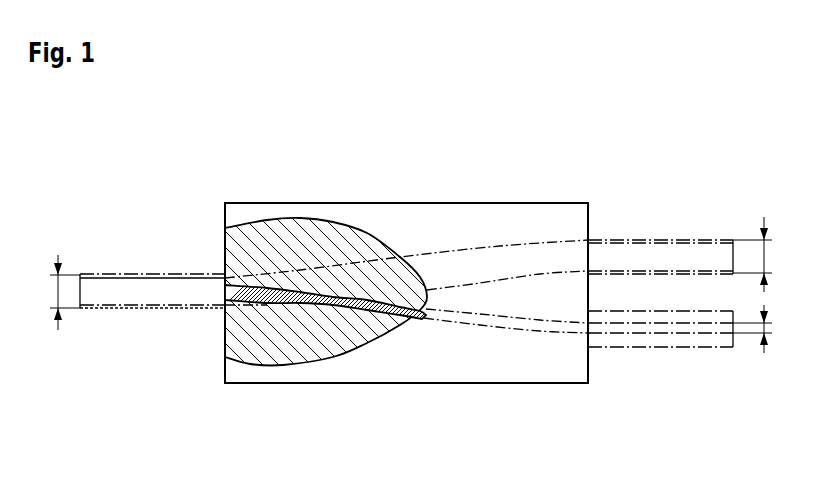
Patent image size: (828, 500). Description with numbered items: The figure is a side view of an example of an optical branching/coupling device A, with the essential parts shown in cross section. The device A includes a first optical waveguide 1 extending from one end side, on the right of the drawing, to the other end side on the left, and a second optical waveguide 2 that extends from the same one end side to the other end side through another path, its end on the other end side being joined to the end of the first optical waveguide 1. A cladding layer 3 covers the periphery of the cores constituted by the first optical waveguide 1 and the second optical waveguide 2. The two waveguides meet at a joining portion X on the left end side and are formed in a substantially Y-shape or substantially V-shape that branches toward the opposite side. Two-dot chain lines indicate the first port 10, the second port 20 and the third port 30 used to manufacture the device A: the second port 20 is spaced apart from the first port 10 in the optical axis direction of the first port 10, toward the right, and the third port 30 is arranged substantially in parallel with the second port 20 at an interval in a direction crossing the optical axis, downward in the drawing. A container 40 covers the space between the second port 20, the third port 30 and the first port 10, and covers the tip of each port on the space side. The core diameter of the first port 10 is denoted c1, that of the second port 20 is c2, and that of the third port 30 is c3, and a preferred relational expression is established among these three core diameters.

The first optical waveguide 1 is at (367, 305).
The second optical waveguide 2 is at (339, 279).
The cladding layer 3 is at (278, 333).
The first port 10 is at (150, 310).
The second port 20 is at (660, 238).
The third port 30 is at (660, 349).
The container 40 is at (495, 383).
The optical branching/coupling device A is at (475, 170).
The joining portion X is at (255, 288).
The core diameter of the first port c1 is at (48, 292).
The core diameter of the second port c2 is at (764, 254).
The core diameter of the third port c3 is at (764, 329).